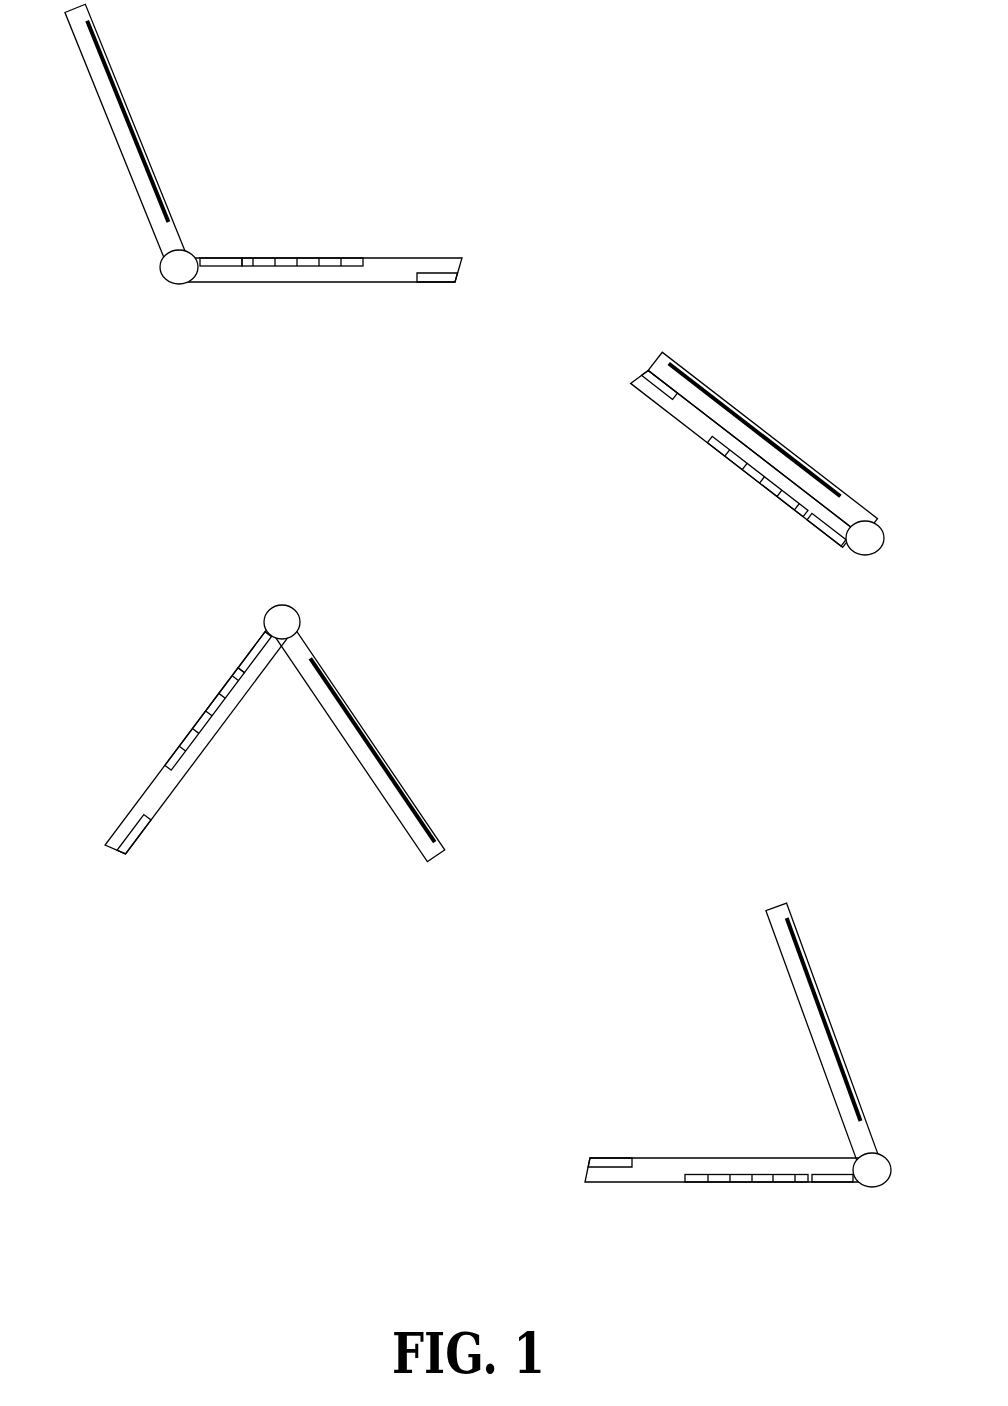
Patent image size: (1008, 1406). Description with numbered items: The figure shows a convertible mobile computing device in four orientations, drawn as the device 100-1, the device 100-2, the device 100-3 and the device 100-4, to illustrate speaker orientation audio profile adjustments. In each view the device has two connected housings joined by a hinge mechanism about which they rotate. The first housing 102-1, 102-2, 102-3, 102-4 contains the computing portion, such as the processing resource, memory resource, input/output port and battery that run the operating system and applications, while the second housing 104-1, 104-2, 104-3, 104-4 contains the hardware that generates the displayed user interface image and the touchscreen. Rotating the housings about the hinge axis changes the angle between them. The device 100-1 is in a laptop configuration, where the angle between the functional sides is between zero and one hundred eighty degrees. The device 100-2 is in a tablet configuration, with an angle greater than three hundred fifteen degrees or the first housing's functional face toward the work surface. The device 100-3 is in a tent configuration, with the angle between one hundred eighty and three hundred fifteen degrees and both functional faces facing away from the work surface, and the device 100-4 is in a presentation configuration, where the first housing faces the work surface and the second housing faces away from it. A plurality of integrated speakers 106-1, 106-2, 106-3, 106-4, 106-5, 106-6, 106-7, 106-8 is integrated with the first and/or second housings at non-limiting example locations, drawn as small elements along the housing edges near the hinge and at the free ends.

The mobile computing device 100-1 is at (412, 114).
The mobile computing device 100-2 is at (819, 310).
The mobile computing device 100-3 is at (372, 863).
The mobile computing device 100-4 is at (633, 1243).
The first housing 102-1 is at (308, 282).
The first housing 102-2 is at (680, 422).
The first housing 102-3 is at (141, 797).
The first housing 102-4 is at (687, 1157).
The second housing 104-1 is at (107, 118).
The second housing 104-2 is at (661, 350).
The second housing 104-3 is at (442, 853).
The second housing 104-4 is at (767, 912).
The integrated speaker 106-1 is at (205, 258).
The integrated speaker 106-2 is at (437, 282).
The integrated speaker 106-3 is at (648, 372).
The integrated speaker 106-4 is at (813, 524).
The integrated speaker 106-5 is at (263, 634).
The integrated speaker 106-6 is at (135, 840).
The integrated speaker 106-7 is at (608, 1160).
The integrated speaker 106-8 is at (837, 1183).